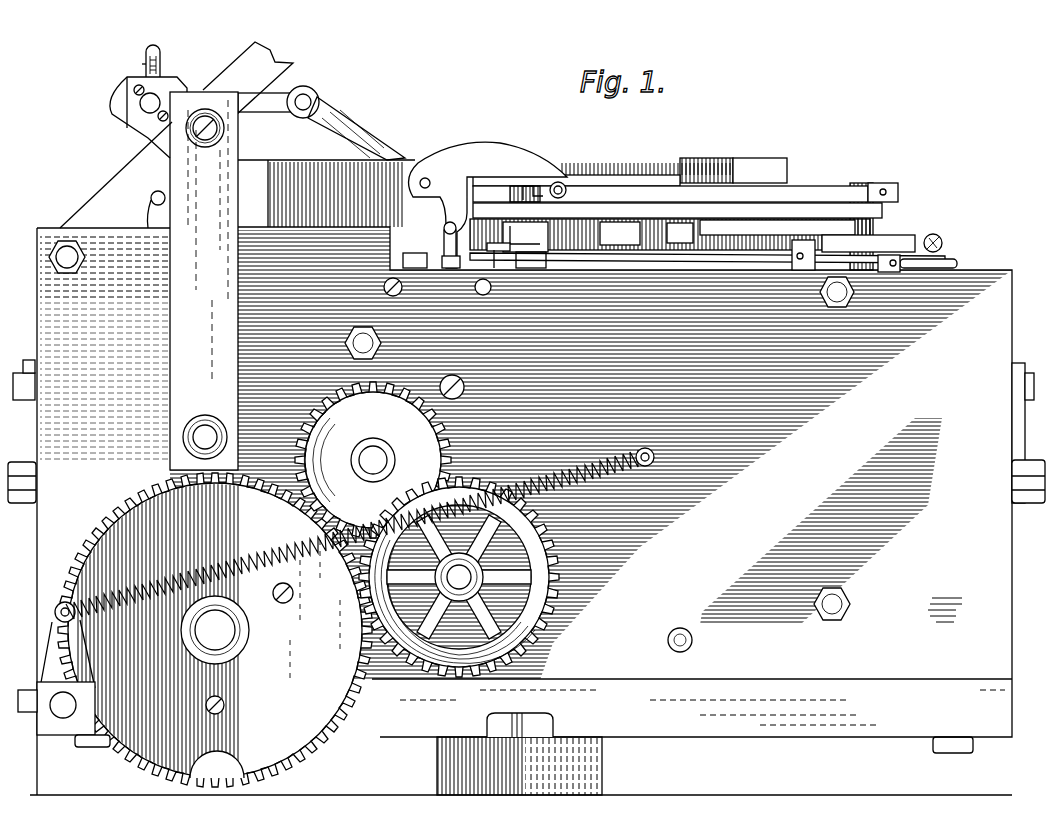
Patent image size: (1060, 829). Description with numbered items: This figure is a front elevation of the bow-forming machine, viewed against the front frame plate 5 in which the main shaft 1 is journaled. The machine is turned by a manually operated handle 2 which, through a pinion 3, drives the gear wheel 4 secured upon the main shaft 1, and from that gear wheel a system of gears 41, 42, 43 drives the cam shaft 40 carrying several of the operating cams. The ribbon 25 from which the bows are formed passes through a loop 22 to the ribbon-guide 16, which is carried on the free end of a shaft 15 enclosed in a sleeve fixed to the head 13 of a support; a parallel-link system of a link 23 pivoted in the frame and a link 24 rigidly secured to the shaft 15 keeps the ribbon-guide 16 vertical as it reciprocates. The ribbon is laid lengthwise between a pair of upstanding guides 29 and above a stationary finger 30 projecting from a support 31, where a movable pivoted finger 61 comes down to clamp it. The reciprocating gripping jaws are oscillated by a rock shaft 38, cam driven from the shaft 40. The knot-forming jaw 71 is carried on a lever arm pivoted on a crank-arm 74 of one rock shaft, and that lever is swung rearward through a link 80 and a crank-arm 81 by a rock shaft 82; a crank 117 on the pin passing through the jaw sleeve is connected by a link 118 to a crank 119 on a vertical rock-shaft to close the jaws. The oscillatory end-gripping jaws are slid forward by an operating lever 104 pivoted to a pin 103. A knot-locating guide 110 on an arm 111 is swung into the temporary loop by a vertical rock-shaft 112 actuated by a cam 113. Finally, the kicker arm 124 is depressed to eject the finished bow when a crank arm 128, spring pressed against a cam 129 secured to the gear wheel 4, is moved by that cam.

The main shaft 1 is at (235, 630).
The handle 2 is at (236, 320).
The pinion 3 is at (244, 436).
The gear wheel 4 is at (122, 508).
The front frame plate 5 is at (526, 511).
The head 13 is at (112, 110).
The shaft 15 is at (140, 102).
The ribbon-guide 16 is at (140, 134).
The loop 22 is at (162, 56).
The link 23 is at (362, 136).
The link 24 is at (282, 96).
The ribbon 25 is at (144, 64).
The upstanding guides 29 is at (588, 239).
The stationary finger 30 is at (466, 270).
The support 31 is at (460, 150).
The rock shaft 38 is at (684, 630).
The shaft 40 is at (452, 574).
The gear 41 is at (442, 450).
The gear 42 is at (402, 424).
The gear 43 is at (540, 556).
The movable pivoted finger 61 is at (441, 226).
The jaw 71 is at (532, 270).
The crank-arm 74 is at (709, 182).
The link 80 is at (786, 226).
The crank-arm 81 is at (876, 234).
The rock shaft 82 is at (901, 268).
The pin 103 is at (580, 268).
The operating lever 104 is at (540, 228).
The knot-locating guide 110 is at (494, 270).
The arm 111 is at (692, 268).
The vertical rock-shaft 112 is at (800, 270).
The cam 113 is at (625, 212).
The crank 117 is at (505, 188).
The link 118 is at (622, 175).
The crank 119 is at (808, 185).
The kicker arm 124 is at (283, 57).
The crank arm 128 is at (72, 672).
The cam 129 is at (279, 713).